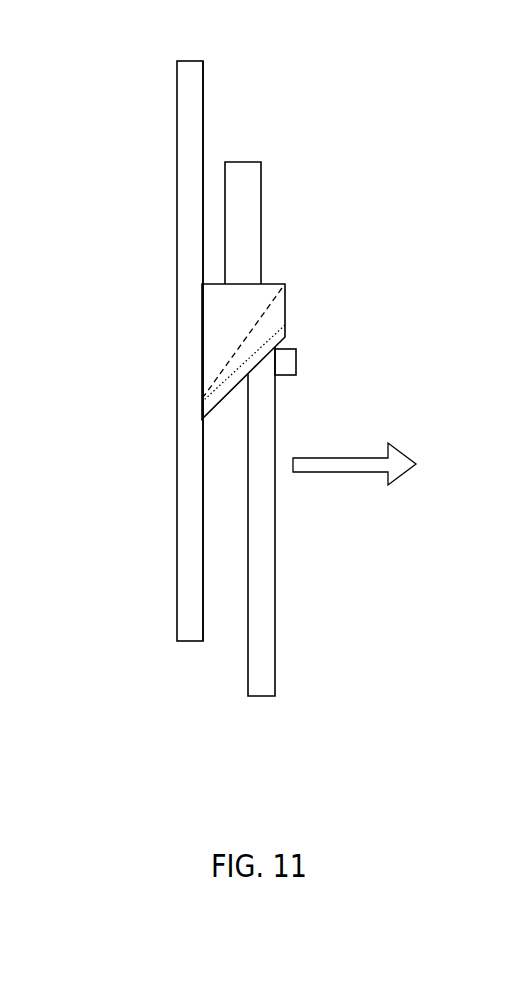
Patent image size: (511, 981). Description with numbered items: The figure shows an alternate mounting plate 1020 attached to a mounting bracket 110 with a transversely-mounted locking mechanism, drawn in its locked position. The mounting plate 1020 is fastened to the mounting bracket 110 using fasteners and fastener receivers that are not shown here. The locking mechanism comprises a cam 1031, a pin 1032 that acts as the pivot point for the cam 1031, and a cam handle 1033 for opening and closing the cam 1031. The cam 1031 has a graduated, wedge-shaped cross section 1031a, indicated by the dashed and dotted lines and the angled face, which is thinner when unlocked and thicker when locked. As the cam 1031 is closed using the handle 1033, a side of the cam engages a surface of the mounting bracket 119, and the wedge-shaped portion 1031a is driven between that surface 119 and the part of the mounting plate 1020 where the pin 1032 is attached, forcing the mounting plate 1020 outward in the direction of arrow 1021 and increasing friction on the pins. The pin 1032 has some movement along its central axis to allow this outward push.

The mounting bracket 110 is at (146, 140).
The surface of the mounting bracket 119 is at (215, 99).
The cam handle 1033 is at (261, 212).
The cam 1031 is at (247, 305).
The wedge-shaped cross section 1031a is at (218, 334).
The pin 1032 is at (297, 362).
The mounting plate 1020 is at (298, 623).
The arrow 1021 is at (356, 503).